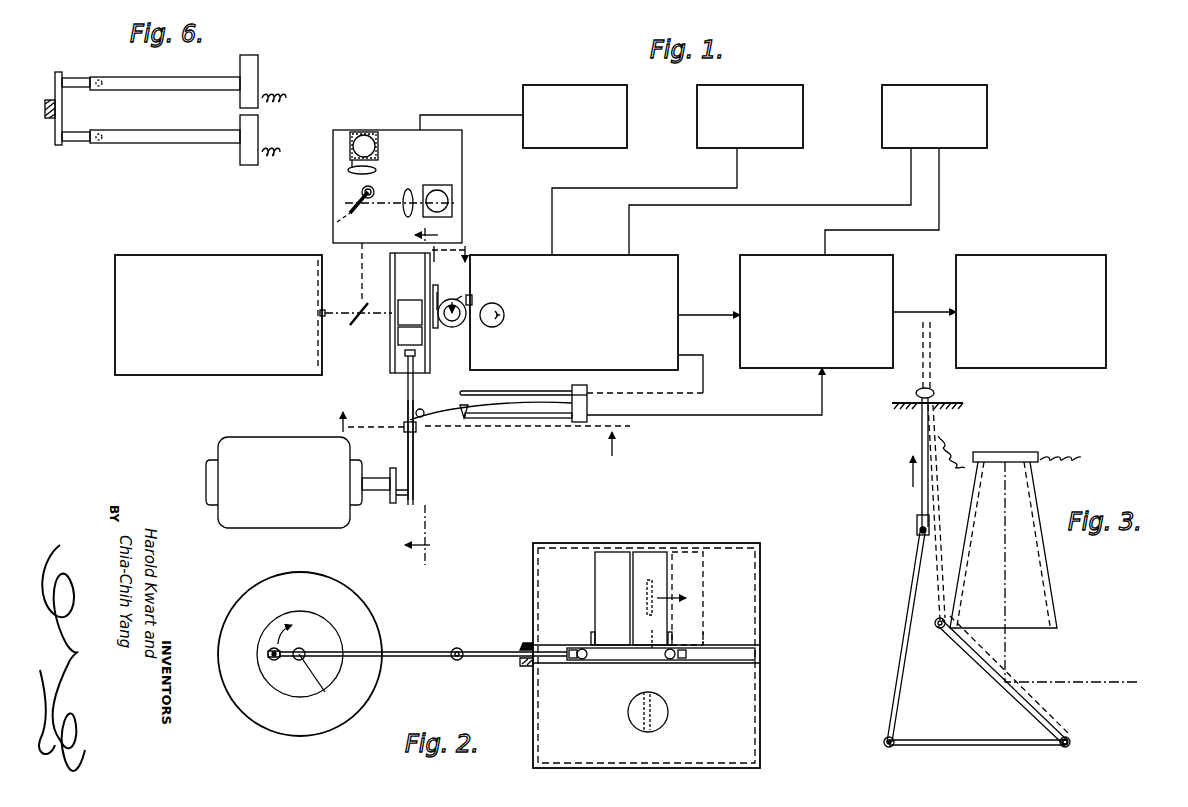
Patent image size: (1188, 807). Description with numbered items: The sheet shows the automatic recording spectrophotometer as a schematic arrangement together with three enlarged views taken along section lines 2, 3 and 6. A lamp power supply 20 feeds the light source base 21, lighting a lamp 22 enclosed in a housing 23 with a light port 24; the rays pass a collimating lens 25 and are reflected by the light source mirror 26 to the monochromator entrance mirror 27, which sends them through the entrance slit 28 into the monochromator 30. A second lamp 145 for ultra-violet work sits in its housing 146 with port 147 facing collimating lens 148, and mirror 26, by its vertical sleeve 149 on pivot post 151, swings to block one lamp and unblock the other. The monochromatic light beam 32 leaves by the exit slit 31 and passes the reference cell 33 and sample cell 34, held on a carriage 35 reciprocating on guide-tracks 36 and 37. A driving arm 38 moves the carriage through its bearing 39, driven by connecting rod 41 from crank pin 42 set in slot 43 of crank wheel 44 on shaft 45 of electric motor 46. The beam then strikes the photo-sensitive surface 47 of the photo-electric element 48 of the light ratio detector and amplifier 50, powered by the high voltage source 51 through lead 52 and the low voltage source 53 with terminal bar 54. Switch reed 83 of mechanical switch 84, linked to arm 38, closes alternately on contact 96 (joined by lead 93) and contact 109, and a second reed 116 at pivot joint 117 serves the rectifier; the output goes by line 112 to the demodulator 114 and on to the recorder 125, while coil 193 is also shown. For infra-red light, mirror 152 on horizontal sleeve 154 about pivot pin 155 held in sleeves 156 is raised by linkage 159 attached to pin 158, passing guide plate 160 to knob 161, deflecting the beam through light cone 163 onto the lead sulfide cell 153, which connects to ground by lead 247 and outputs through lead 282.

In FIG. 1, the section line 2— 2 is at (400, 391).
In FIG. 1, the section line 3— 3 is at (449, 261).
In FIG. 1, the section line 6— 6 is at (477, 434).
In FIG. 1, the lamp power supply 20 is at (523, 116).
In FIG. 1, the light source base 21 is at (462, 168).
In FIG. 1, the lamp 22 is at (437, 190).
In FIG. 1, the housing 23 is at (452, 208).
In FIG. 1, the light port 24 is at (418, 195).
In FIG. 1, the collimating lens 25 is at (398, 196).
In FIG. 1, the light source mirror 26 is at (348, 216).
In FIG. 1, the monochromator entrance mirror 27 is at (364, 304).
In FIG. 2, the monochromator entrance mirror 27 is at (664, 726).
In FIG. 2, the entrance slit 28 is at (668, 712).
In FIG. 1, the monochromator 30 is at (218, 315).
In FIG. 2, the monochromator 30 is at (760, 600).
In FIG. 1, the exit slit 31 is at (318, 312).
In FIG. 2, the exit slit 31 is at (660, 596).
In FIG. 1, the monochromatic light beam 32 is at (358, 302).
In FIG. 3, the monochromatic light beam 32 is at (1082, 680).
In FIG. 1, the reference cell 33 is at (405, 310).
In FIG. 2, the reference cell 33 is at (690, 553).
In FIG. 1, the sample cell 34 is at (405, 337).
In FIG. 2, the sample cell 34 is at (595, 584).
In FIG. 1, the carriage 35 is at (406, 375).
In FIG. 2, the carriage 35 is at (611, 664).
In FIG. 1, the guide-track 36 is at (400, 354).
In FIG. 2, the guide-track 36 is at (710, 664).
In FIG. 1, the guide-track 37 is at (428, 360).
In FIG. 6, the driving arm 38 is at (50, 118).
In FIG. 1, the driving arm 38 is at (406, 405).
In FIG. 2, the driving arm 38 is at (508, 666).
In FIG. 1, the bearing 39 is at (422, 408).
In FIG. 2, the bearing 39 is at (521, 637).
In FIG. 1, the connecting rod 41 is at (414, 483).
In FIG. 2, the connecting rod 41 is at (407, 658).
In FIG. 1, the crank pin 42 is at (396, 504).
In FIG. 2, the crank pin 42 is at (268, 660).
In FIG. 2, the slot 43 is at (268, 655).
In FIG. 1, the crank wheel 44 is at (392, 495).
In FIG. 2, the crank wheel 44 is at (296, 618).
In FIG. 1, the shaft 45 is at (375, 480).
In FIG. 2, the shaft 45 is at (317, 677).
In FIG. 1, the electric motor 46 is at (284, 482).
In FIG. 2, the electric motor 46 is at (243, 600).
In FIG. 1, the photo-sensitive surface 47 is at (498, 324).
In FIG. 1, the photo-electric element 48 is at (500, 308).
In FIG. 1, the light ratio detector and amplifier 50 is at (605, 324).
In FIG. 1, the high voltage power supply source 51 is at (750, 116).
In FIG. 1, the lead 52 is at (610, 188).
In FIG. 1, the low voltage power supply source 53 is at (934, 117).
In FIG. 1, the terminal bar 54 is at (800, 205).
In FIG. 6, the switch reed 83 is at (85, 78).
In FIG. 1, the switch reed 83 is at (464, 420).
In FIG. 6, the mechanical switch 84 is at (258, 72).
In FIG. 1, the mechanical switch 84 is at (582, 419).
In FIG. 6, the lead 93 is at (286, 99).
In FIG. 6, the contact 96 is at (170, 77).
In FIG. 1, the contact 96 is at (525, 419).
In FIG. 6, the contact 109 is at (158, 143).
In FIG. 1, the contact 109 is at (508, 392).
In FIG. 1, the line 112 is at (732, 415).
In FIG. 6, the demodulator 114 is at (258, 126).
In FIG. 6, the switch reed 116 is at (82, 143).
In FIG. 6, the pivot joint 117 is at (60, 146).
In FIG. 1, the pivot joint 117 is at (418, 430).
In FIG. 1, the recorder 125 is at (1031, 311).
In FIG. 1, the lamp 145 is at (363, 133).
In FIG. 1, the housing 146 is at (370, 140).
In FIG. 1, the light port 147 is at (352, 164).
In FIG. 1, the collimating lens 148 is at (375, 168).
In FIG. 1, the vertical sleeve 149 is at (362, 189).
In FIG. 1, the vertical pivot post 151 is at (363, 194).
In FIG. 1, the mirror 152 is at (460, 322).
In FIG. 3, the mirror 152 is at (932, 736).
In FIG. 1, the lead sulfide photo-resistance cell 153 is at (466, 310).
In FIG. 1, the horizontal sleeve 154 is at (447, 326).
In FIG. 3, the horizontal sleeve 154 is at (1070, 738).
In FIG. 3, the horizontal pivot pin 155 is at (1012, 452).
In FIG. 1, the sleeves 156 is at (437, 290).
In FIG. 1, the pin 158 is at (470, 300).
In FIG. 3, the pin 158 is at (884, 742).
In FIG. 3, the mirror-adjusting linkage 159 is at (900, 637).
In FIG. 3, the guide plate 160 is at (952, 403).
In FIG. 3, the gripping-knob 161 is at (916, 393).
In FIG. 1, the light cone 163 is at (455, 300).
In FIG. 3, the light cone 163 is at (1048, 563).
In FIG. 6, the second coil 193 is at (271, 159).
In FIG. 3, the lead 247 is at (1064, 448).
In FIG. 3, the lead 282 is at (952, 440).